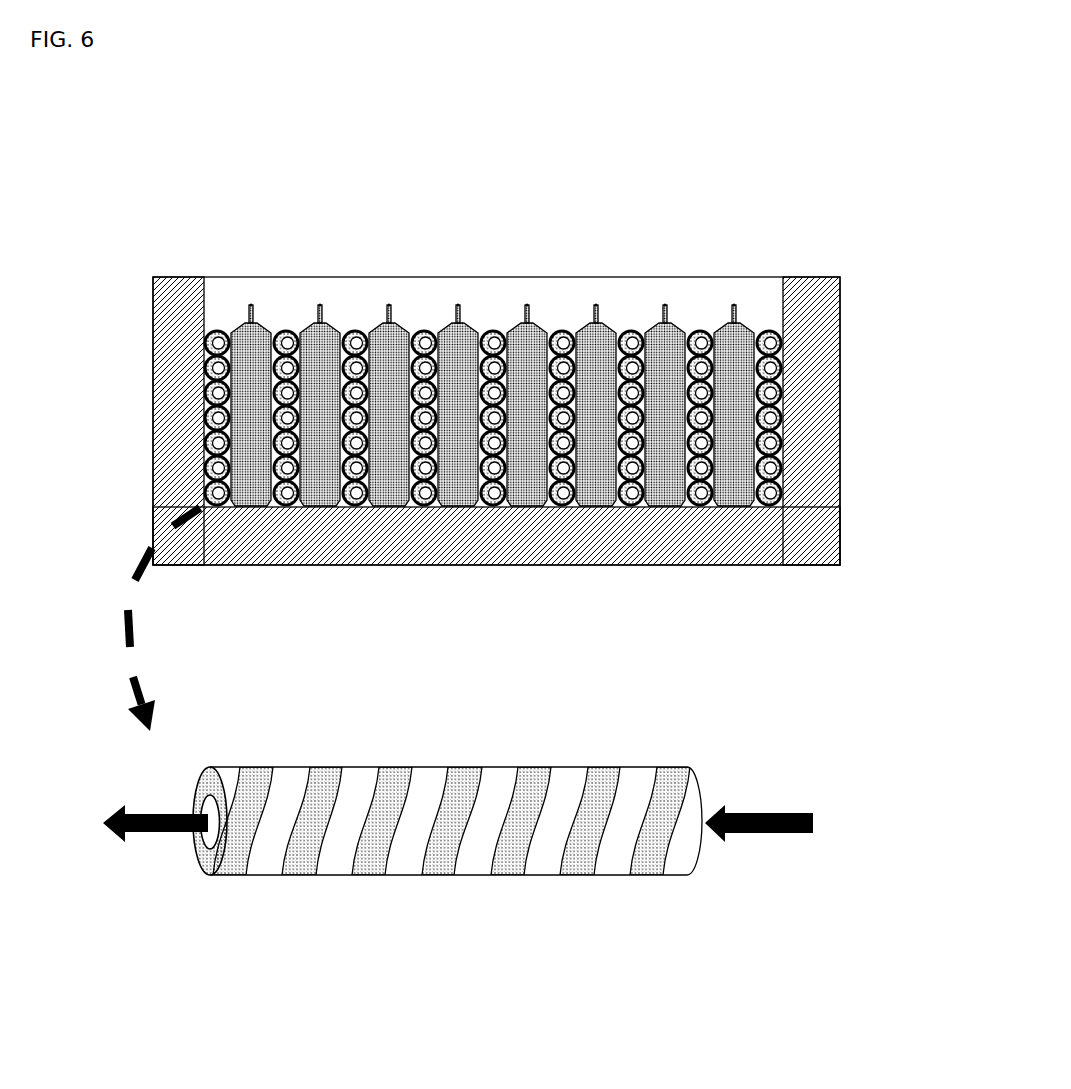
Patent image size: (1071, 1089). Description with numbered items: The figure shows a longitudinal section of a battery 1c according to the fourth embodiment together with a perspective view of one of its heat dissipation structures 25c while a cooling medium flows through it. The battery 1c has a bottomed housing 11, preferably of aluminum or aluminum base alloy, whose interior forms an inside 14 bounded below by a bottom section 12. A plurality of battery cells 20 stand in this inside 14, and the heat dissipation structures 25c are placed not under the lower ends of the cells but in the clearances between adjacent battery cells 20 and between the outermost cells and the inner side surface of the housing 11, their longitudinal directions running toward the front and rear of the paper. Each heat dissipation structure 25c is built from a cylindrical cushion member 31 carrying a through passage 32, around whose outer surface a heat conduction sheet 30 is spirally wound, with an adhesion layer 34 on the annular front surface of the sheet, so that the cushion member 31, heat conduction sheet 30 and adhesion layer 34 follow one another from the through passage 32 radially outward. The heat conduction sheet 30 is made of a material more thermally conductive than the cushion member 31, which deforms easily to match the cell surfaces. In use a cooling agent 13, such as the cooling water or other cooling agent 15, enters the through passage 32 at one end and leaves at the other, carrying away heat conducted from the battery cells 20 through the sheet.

The battery 1c is at (916, 218).
The housing 11 is at (840, 317).
The bottom section 12 is at (790, 553).
The inside 14 is at (220, 295).
The battery cell 20 is at (261, 330).
The heat dissipation structure 25c is at (786, 352).
The heat conduction sheet 30 is at (456, 856).
The adhesion layer 34 is at (272, 863).
The cushion member 31 is at (203, 778).
The through passage 32 is at (208, 808).
The cooling agent 13 is at (141, 844).
The cooling agent 15 is at (141, 844).